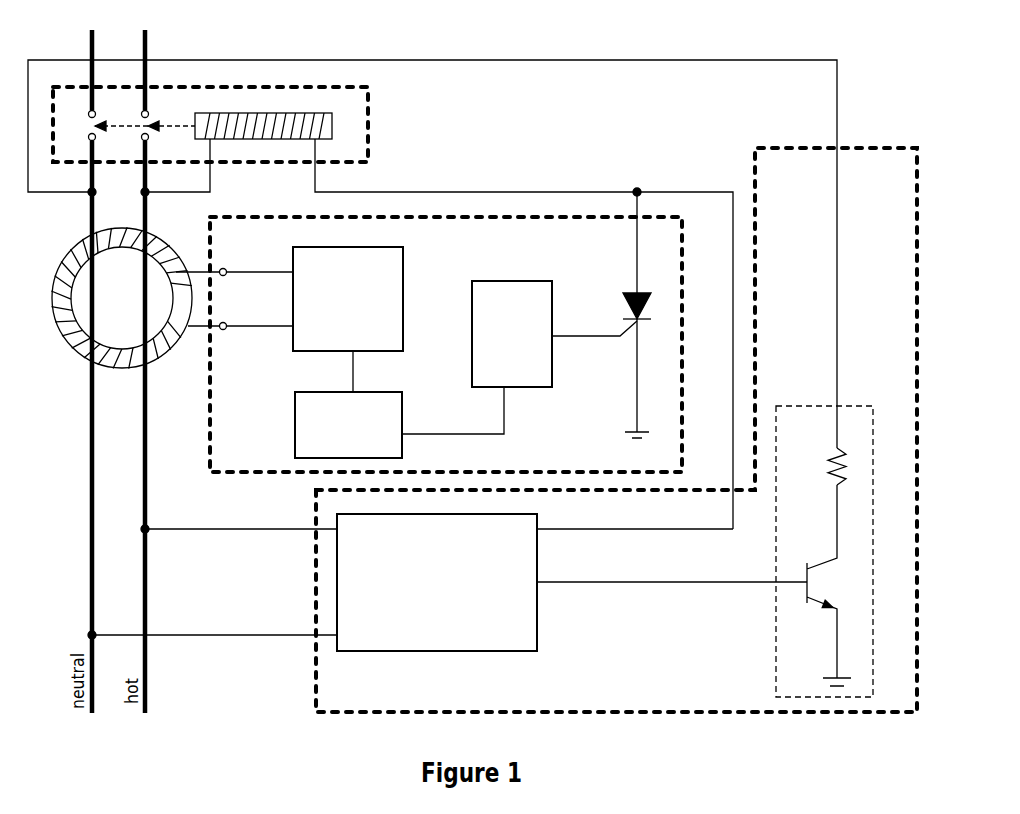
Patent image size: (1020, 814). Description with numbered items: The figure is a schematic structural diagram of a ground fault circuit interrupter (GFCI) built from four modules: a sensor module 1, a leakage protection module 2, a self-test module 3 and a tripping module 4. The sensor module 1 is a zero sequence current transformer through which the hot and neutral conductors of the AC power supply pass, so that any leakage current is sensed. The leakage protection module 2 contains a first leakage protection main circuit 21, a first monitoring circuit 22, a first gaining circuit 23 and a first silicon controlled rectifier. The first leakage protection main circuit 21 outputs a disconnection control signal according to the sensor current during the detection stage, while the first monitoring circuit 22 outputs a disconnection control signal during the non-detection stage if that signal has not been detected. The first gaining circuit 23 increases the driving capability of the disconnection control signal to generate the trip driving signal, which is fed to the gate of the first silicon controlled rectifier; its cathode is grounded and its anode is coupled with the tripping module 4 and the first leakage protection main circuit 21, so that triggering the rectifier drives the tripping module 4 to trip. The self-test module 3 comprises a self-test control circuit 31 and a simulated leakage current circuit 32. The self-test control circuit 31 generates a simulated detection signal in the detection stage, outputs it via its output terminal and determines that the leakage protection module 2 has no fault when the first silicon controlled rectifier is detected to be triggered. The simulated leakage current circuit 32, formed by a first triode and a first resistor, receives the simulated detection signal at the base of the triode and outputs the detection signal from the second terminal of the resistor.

The sensor module 1 is at (70, 345).
The leakage protection module 2 is at (524, 214).
The self-test module 3 is at (863, 146).
The tripping module 4 is at (256, 86).
The first leakage protection main circuit 21 is at (407, 297).
The first monitoring circuit 22 is at (405, 415).
The first gaining circuit 23 is at (515, 281).
The self-test control circuit 31 is at (493, 652).
The simulated leakage current circuit 32 is at (853, 404).